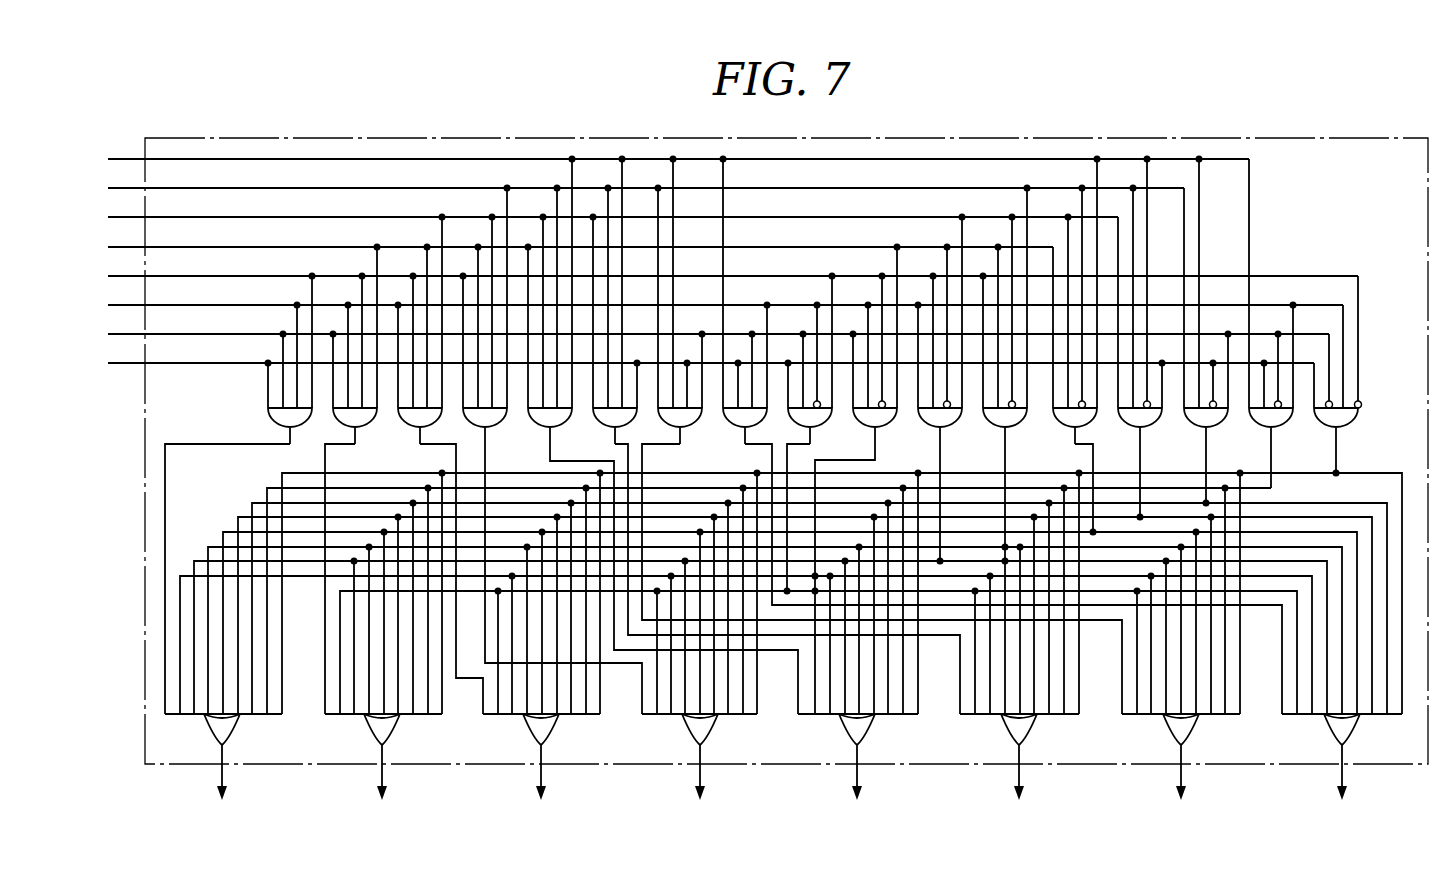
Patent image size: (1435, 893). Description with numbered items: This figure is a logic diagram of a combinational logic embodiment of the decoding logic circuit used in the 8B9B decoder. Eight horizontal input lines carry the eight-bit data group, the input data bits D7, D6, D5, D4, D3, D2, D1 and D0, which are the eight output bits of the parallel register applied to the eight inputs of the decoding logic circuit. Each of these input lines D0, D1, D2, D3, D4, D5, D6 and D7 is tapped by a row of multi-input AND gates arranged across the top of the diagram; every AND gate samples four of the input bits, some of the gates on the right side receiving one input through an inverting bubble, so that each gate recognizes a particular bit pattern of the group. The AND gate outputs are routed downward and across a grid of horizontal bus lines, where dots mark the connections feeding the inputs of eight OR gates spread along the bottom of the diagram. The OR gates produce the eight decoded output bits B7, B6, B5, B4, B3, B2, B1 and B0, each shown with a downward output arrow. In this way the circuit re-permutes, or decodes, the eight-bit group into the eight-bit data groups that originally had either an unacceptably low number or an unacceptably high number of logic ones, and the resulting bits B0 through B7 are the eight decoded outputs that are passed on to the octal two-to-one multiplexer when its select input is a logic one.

The input data bit D0 is at (663, 161).
The input data bit D1 is at (631, 190).
The input data bit D2 is at (598, 219).
The input data bit D3 is at (565, 249).
The input data bit D4 is at (718, 278).
The input data bit D5 is at (710, 307).
The input data bit D6 is at (703, 336).
The input data bit D7 is at (696, 365).
The decoded output bit B0 is at (1342, 776).
The decoded output bit B1 is at (1181, 776).
The decoded output bit B2 is at (1019, 776).
The decoded output bit B3 is at (858, 776).
The decoded output bit B4 is at (699, 776).
The decoded output bit B5 is at (541, 776).
The decoded output bit B6 is at (383, 776).
The decoded output bit B7 is at (223, 776).